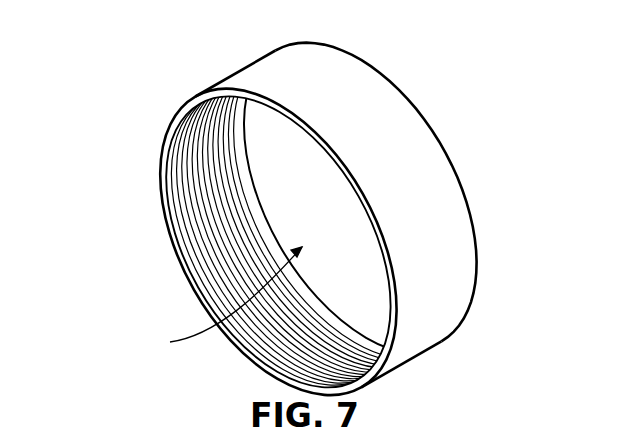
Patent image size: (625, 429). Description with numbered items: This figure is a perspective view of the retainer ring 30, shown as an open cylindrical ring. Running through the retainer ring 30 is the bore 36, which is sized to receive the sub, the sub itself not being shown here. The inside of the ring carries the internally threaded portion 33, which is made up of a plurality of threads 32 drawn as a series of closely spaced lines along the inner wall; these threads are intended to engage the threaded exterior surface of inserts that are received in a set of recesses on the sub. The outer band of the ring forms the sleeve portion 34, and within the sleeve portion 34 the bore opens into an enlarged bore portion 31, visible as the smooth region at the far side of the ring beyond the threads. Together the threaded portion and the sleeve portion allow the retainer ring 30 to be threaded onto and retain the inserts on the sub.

The retainer ring 30 is at (306, 214).
The enlarged bore portion 31 is at (306, 295).
The threads 32 is at (228, 214).
The internally threaded portion 33 is at (319, 213).
The sleeve portion 34 is at (408, 130).
The bore 36 is at (219, 302).